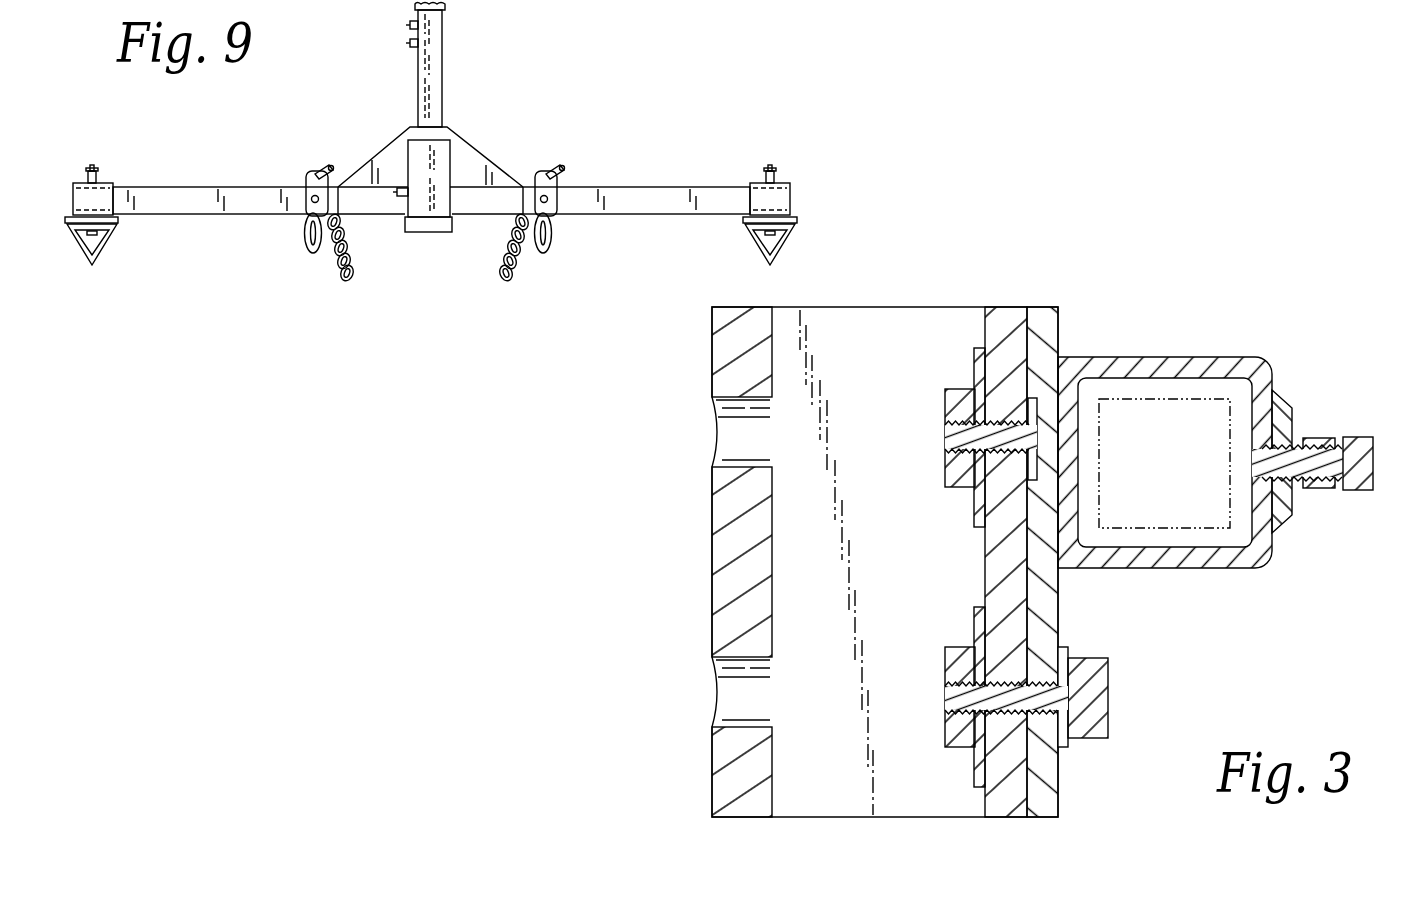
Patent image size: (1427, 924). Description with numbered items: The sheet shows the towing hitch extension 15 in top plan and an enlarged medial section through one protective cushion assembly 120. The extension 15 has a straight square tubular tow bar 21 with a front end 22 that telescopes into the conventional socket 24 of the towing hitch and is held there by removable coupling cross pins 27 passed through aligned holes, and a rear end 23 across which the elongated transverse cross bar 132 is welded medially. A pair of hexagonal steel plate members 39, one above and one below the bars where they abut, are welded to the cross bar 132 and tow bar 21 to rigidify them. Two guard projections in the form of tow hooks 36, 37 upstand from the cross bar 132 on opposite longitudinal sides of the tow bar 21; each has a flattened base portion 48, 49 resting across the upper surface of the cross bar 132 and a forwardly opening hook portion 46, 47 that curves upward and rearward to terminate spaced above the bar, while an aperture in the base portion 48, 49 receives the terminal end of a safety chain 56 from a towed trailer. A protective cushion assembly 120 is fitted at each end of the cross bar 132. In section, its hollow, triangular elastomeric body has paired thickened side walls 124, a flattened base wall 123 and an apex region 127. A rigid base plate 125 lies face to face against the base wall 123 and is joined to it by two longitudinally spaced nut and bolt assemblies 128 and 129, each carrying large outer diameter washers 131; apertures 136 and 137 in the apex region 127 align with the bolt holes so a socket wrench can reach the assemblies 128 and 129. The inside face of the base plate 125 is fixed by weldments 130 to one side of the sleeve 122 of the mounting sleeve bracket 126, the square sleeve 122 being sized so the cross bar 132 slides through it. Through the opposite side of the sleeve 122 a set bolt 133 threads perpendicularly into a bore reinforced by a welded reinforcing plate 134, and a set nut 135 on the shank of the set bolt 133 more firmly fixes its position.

In FIG. 9, the towing hitch extension 15 is at (593, 96).
In FIG. 9, the tow bar 21 is at (430, 80).
In FIG. 9, the front end 22 is at (442, 35).
In FIG. 9, the rear end 23 is at (430, 223).
In FIG. 9, the socket 24 is at (445, 6).
In FIG. 9, the coupling cross pins 27 is at (406, 25).
In FIG. 9, the guard projection 36 is at (279, 192).
In FIG. 9, the guard projection 37 is at (579, 190).
In FIG. 9, the plate members 39 is at (472, 165).
In FIG. 9, the hook portion 46 is at (306, 243).
In FIG. 9, the hook portion 47 is at (552, 222).
In FIG. 9, the base portion 48 is at (307, 190).
In FIG. 9, the base portion 49 is at (542, 190).
In FIG. 9, the safety chain 56 is at (337, 267).
In FIG. 9, the protective cushion assembly 120 is at (110, 240).
In FIG. 3, the protective cushion assembly 120 is at (663, 552).
In FIG. 3, the sleeve 122 is at (1267, 360).
In FIG. 3, the base wall 123 is at (1002, 558).
In FIG. 3, the side walls 124 is at (862, 332).
In FIG. 3, the base plate 125 is at (1042, 768).
In FIG. 3, the mounting sleeve bracket 126 is at (1327, 447).
In FIG. 3, the apex region 127 is at (740, 347).
In FIG. 3, the nut and bolt assembly 128 is at (1090, 482).
In FIG. 3, the nut and bolt assembly 129 is at (1027, 697).
In FIG. 3, the weldments 130 is at (1062, 357).
In FIG. 3, the washers 131 is at (975, 365).
In FIG. 9, the cross bar 132 is at (193, 195).
In FIG. 3, the cross bar 132 is at (1225, 537).
In FIG. 3, the set bolt 133 is at (1367, 463).
In FIG. 3, the reinforcing plate 134 is at (1282, 417).
In FIG. 3, the set nut 135 is at (1318, 485).
In FIG. 3, the aperture 136 is at (742, 438).
In FIG. 3, the aperture 137 is at (735, 692).